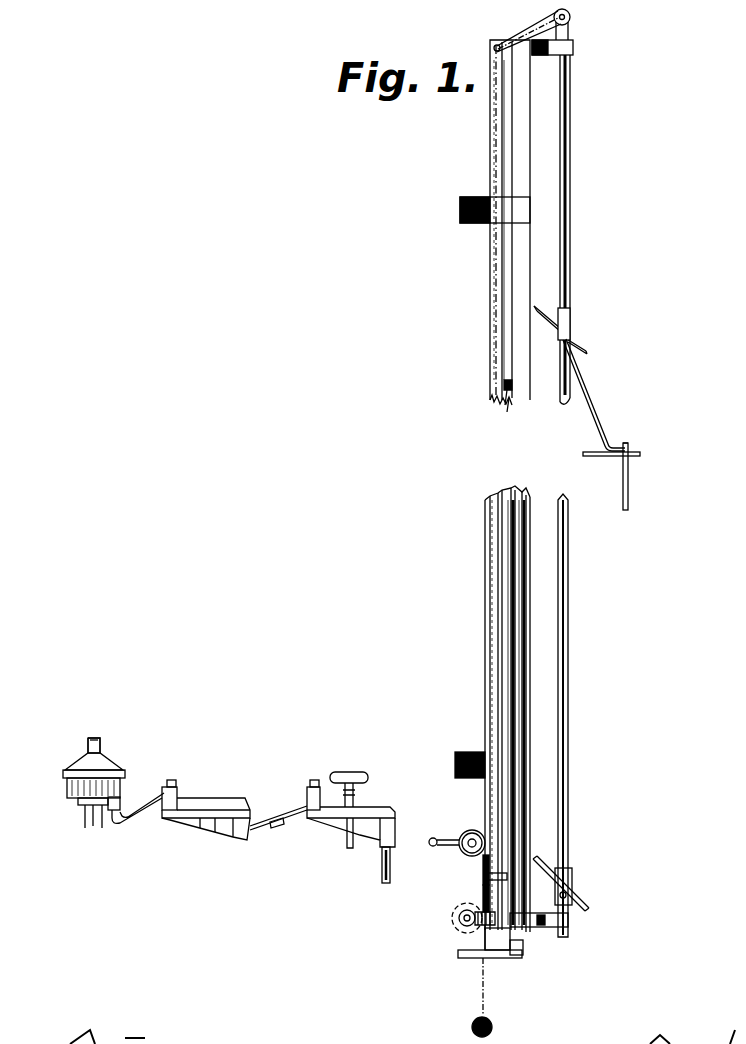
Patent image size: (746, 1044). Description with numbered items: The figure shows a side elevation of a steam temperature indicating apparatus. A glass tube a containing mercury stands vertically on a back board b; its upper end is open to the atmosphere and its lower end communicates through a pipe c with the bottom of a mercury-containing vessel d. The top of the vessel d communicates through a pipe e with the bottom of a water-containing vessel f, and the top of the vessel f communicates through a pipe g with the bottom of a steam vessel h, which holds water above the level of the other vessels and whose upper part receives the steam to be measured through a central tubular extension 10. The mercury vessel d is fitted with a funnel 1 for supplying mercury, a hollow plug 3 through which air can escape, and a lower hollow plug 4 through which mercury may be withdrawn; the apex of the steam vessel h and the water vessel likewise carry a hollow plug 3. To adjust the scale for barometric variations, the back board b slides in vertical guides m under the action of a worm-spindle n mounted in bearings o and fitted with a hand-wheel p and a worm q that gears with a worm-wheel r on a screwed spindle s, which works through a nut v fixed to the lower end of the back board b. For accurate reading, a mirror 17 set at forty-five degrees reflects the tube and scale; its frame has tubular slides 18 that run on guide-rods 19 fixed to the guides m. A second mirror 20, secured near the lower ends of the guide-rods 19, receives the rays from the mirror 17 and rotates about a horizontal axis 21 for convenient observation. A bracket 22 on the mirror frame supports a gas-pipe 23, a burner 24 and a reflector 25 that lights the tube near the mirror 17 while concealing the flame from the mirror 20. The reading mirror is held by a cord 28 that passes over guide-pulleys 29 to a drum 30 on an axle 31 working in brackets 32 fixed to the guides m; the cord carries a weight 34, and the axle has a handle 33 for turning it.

The funnel 1 is at (350, 775).
The hollow plug 3 is at (88, 738).
The hollow plug 4 is at (348, 850).
The central tubular extension 10 is at (82, 805).
The mirror 17 is at (545, 312).
The tubular slides 18 is at (571, 318).
The guide-rods 19 is at (562, 395).
The second mirror 20 is at (582, 900).
The horizontal axis 21 is at (560, 888).
The bracket 22 is at (592, 412).
The gas-pipe 23 is at (630, 470).
The burner 24 is at (628, 447).
The reflector 25 is at (606, 456).
The cord 28 is at (490, 248).
The guide-pulleys 29 is at (570, 17).
The drum 30 is at (472, 830).
The axle 31 is at (468, 848).
The brackets 32 is at (460, 832).
The handle 33 is at (431, 846).
The weight 34 is at (472, 1026).
The glass tube a is at (520, 777).
The back board b is at (505, 490).
The pipe c is at (470, 955).
The mercury-containing vessel d is at (360, 808).
The pipe e is at (278, 825).
The water-containing vessel f is at (213, 806).
The pipe g is at (137, 816).
The steam vessel h is at (100, 760).
The vertical guides m is at (495, 372).
The worm-spindle n is at (452, 918).
The bearings o is at (466, 910).
The hand-wheel p is at (452, 913).
The worm q is at (460, 925).
The worm-wheel r is at (516, 942).
The screwed spindle s is at (490, 893).
The nut v is at (487, 875).